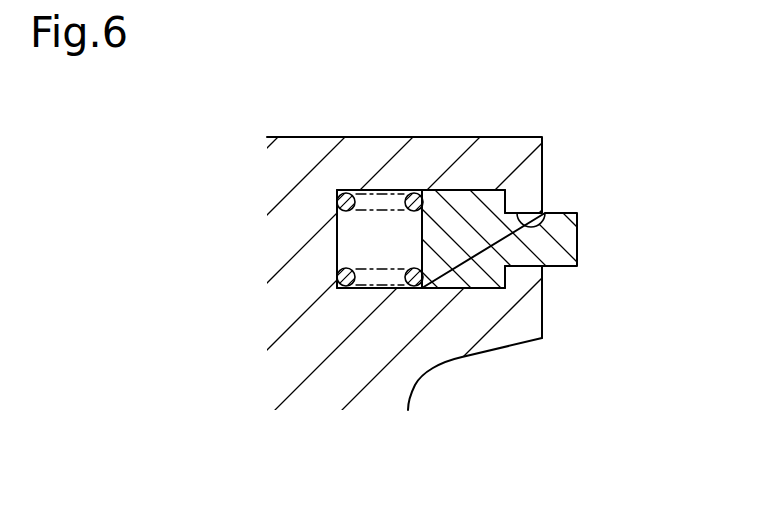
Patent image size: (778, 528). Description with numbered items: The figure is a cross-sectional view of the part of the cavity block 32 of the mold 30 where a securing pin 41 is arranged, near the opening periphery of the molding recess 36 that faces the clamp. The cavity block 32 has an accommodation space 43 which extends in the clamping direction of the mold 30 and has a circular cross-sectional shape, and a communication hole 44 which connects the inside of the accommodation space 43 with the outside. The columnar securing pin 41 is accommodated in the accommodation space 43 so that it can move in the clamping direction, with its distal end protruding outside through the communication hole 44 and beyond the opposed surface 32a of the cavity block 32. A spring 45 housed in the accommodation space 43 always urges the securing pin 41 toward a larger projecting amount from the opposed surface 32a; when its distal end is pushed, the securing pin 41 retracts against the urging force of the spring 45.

The mold 30 is at (391, 244).
The cavity block 32 is at (575, 111).
The opposed surface 32a is at (543, 312).
The molding recess 36 is at (425, 373).
The securing pin 41 is at (578, 244).
The accommodation space 43 is at (337, 233).
The communication hole 44 is at (542, 213).
The spring 45 is at (382, 192).